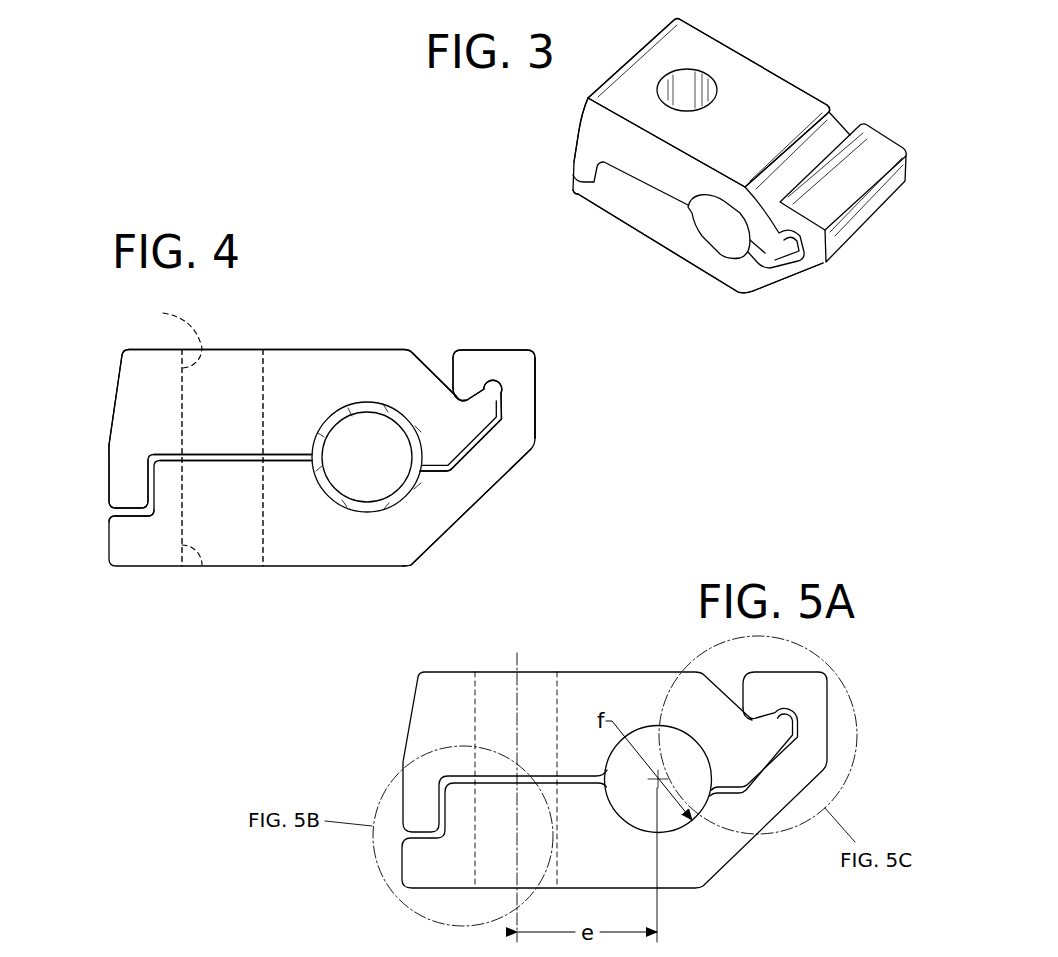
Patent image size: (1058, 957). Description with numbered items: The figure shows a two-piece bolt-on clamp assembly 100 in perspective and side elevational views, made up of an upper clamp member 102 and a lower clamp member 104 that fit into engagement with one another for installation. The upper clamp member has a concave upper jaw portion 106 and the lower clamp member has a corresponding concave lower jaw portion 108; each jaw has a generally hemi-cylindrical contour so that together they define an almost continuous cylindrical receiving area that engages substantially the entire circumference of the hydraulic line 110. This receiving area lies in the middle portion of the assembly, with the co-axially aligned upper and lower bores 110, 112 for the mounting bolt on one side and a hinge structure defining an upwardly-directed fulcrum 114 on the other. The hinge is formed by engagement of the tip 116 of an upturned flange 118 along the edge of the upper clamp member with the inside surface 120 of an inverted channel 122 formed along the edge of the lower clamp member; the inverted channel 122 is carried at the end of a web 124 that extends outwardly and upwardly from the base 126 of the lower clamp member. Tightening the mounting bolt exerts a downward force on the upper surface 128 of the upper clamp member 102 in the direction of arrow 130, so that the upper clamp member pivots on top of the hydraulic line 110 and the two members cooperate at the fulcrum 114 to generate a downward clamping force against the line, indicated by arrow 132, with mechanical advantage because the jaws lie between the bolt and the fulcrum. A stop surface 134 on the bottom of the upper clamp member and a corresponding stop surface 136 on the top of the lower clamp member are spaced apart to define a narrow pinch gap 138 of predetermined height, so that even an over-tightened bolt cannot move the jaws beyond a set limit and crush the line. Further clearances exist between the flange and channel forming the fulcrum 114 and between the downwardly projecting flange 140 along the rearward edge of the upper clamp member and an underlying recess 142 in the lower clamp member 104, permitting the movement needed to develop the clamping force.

In FIG. 3, the clamp assembly 100 is at (813, 68).
In FIG. 3, the upper clamp member 102 is at (751, 61).
In FIG. 4, the upper clamp member 102 is at (315, 345).
In FIG. 3, the lower clamp member 104 is at (619, 222).
In FIG. 4, the lower clamp member 104 is at (347, 570).
In FIG. 3, the dome protrusion 106 is at (702, 212).
In FIG. 3, the lower jaw portion 108 is at (725, 242).
In FIG. 3, the hydraulic line 110 is at (683, 80).
In FIG. 4, the hydraulic line 110 is at (407, 487).
In FIG. 4, the lower bore 112 is at (190, 585).
In FIG. 4, the fulcrum 114 is at (490, 378).
In FIG. 4, the tip 116 is at (491, 384).
In FIG. 4, the upturned flange 118 is at (485, 413).
In FIG. 4, the inside surface 120 is at (502, 394).
In FIG. 4, the inverted channel 122 is at (470, 370).
In FIG. 4, the web 124 is at (522, 423).
In FIG. 4, the base 126 is at (398, 545).
In FIG. 4, the upper surface 128 is at (333, 349).
In FIG. 4, the arrow 130 is at (275, 345).
In FIG. 4, the arrow 132 is at (367, 393).
In FIG. 4, the stop surface 134 is at (227, 461).
In FIG. 4, the stop surface 136 is at (202, 453).
In FIG. 4, the pinch gap 138 is at (253, 456).
In FIG. 4, the downwardly projecting flange 140 is at (128, 483).
In FIG. 4, the recess 142 is at (142, 510).